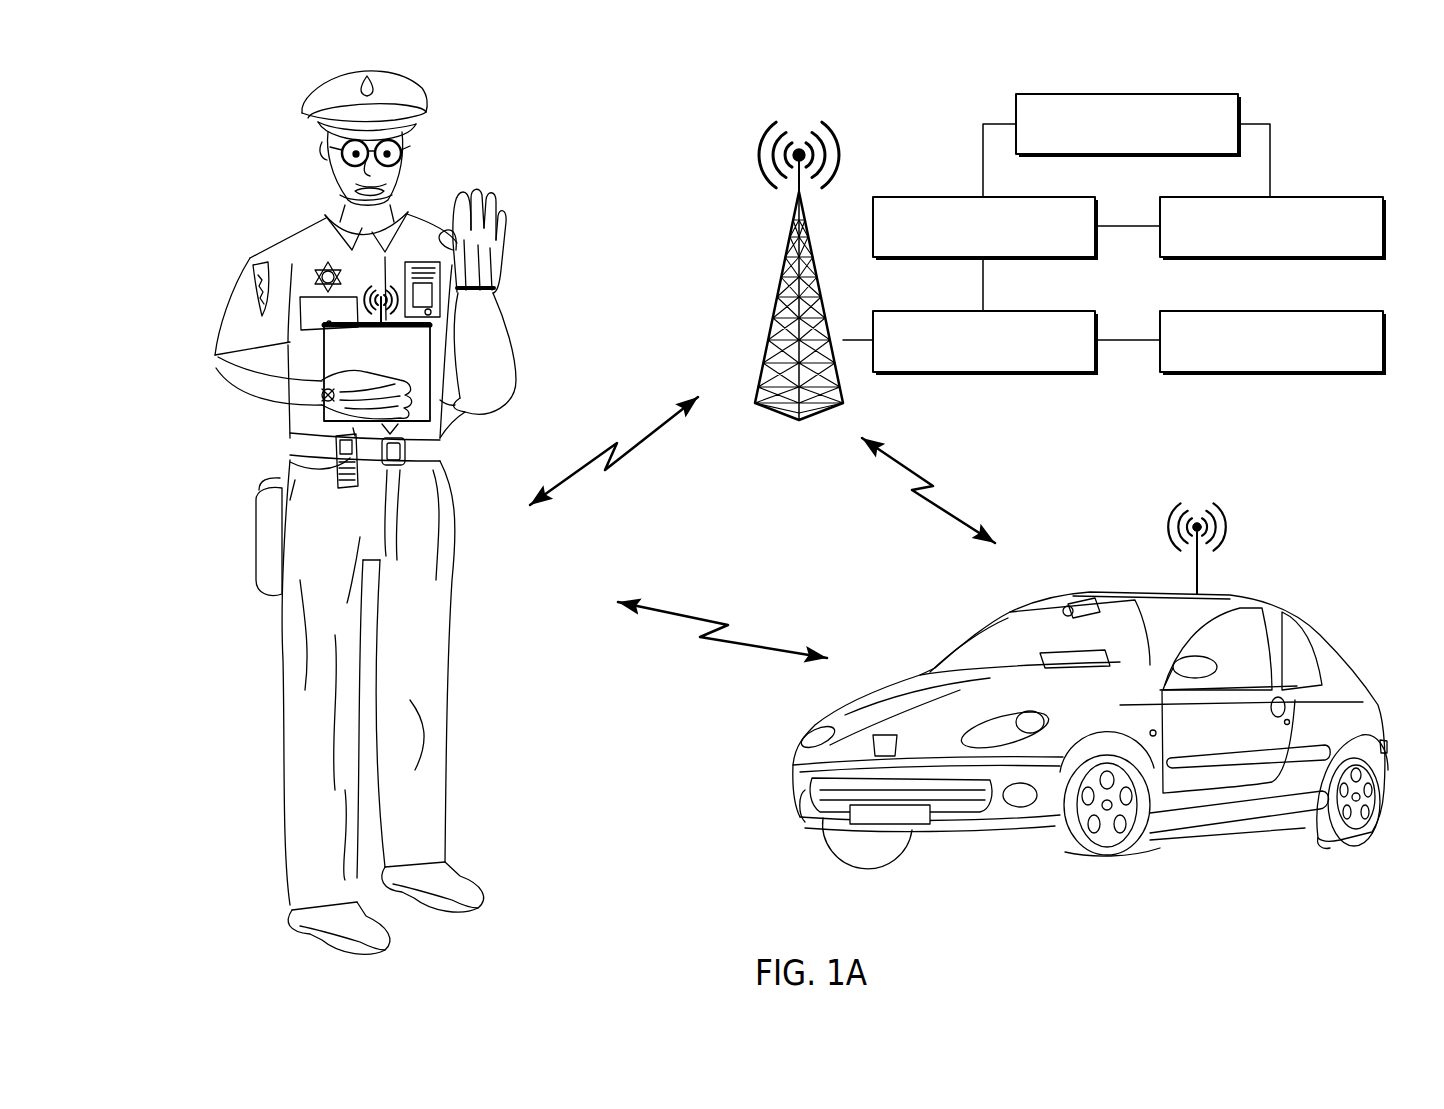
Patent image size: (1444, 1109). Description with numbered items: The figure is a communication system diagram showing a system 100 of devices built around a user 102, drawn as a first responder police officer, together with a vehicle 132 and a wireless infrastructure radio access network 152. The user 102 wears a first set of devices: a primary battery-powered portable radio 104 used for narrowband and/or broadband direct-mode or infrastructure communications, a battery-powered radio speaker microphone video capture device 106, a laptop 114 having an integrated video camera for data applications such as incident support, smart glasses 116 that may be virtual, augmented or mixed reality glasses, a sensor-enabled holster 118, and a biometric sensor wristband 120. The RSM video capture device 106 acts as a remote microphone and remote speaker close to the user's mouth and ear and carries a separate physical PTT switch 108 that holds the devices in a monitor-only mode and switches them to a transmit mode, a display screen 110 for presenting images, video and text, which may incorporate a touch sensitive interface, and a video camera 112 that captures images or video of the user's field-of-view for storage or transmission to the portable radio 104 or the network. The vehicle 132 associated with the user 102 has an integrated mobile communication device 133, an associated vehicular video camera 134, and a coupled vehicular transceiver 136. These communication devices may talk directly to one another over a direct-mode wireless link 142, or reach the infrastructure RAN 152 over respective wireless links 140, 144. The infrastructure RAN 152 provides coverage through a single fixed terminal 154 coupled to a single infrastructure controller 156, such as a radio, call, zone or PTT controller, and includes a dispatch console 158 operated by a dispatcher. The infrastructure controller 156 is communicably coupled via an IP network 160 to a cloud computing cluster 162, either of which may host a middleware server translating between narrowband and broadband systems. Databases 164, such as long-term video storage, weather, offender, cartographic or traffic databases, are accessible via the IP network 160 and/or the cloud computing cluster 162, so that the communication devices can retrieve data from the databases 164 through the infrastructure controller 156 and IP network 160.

The system 100 is at (186, 110).
The user 102 is at (442, 184).
The portable radio 104 is at (334, 472).
The radio speaker microphone video capture device 106 is at (470, 210).
The physical PTT switch 108 is at (445, 262).
The display screen 110 is at (443, 310).
The video camera 112 is at (433, 320).
The laptop 114 is at (413, 408).
The smart glasses 116 is at (332, 153).
The sensor-enabled holster 118 is at (257, 550).
The biometric sensor wristband 120 is at (480, 288).
The vehicle 132 is at (1352, 618).
The mobile communication device 133 is at (1045, 660).
The vehicular video camera 134 is at (1088, 600).
The vehicular transceiver 136 is at (1200, 560).
The wireless link 140 is at (654, 434).
The direct-mode wireless link 142 is at (678, 610).
The wireless link 144 is at (904, 462).
The infrastructure radio access network 152 is at (748, 158).
The fixed terminal 154 is at (783, 308).
The infrastructure controller 156 is at (988, 374).
The dispatch console 158 is at (1273, 374).
The IP network 160 is at (916, 262).
The cloud computing cluster 162 is at (1272, 262).
The databases 164 is at (1016, 108).